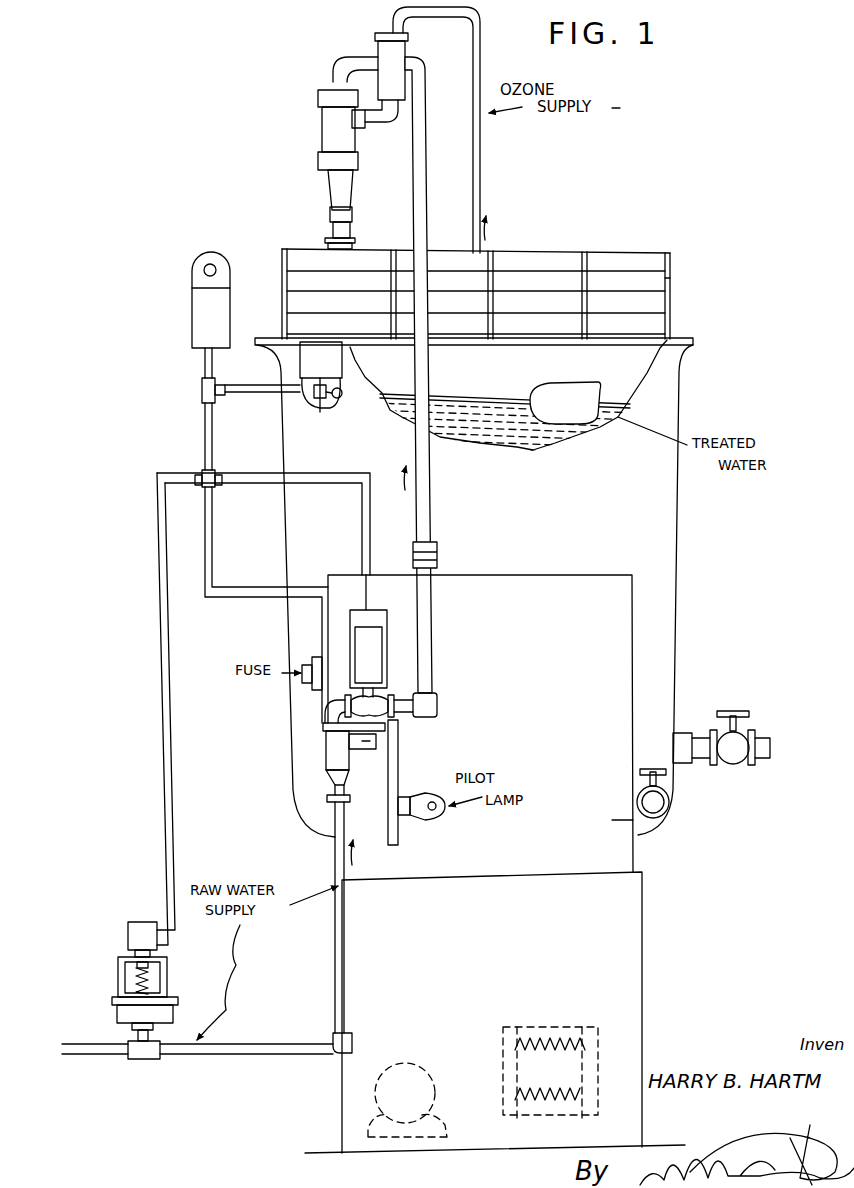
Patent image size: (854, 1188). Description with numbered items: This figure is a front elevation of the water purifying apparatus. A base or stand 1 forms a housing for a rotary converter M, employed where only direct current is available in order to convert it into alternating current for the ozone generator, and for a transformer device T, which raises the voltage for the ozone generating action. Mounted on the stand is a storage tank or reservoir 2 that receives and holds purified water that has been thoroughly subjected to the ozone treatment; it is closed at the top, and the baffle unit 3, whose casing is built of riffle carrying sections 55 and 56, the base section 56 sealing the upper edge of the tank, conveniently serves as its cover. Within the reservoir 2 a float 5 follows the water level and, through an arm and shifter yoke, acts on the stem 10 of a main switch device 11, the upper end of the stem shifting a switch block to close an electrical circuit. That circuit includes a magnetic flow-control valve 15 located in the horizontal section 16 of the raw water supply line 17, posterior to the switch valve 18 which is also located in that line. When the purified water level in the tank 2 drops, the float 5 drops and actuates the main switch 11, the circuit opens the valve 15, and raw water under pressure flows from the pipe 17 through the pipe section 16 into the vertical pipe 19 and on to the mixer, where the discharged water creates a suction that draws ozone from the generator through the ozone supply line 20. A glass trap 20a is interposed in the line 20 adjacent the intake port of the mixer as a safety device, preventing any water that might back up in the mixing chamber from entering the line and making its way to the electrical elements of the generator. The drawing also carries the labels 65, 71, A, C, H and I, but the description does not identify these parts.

The base or stand 1 is at (495, 1012).
The storage tank or reservoir 2 is at (475, 588).
The baffle unit 3 is at (545, 262).
The float 5 is at (531, 394).
The stem 10 is at (320, 412).
The main switch device 11 is at (321, 361).
The magnetic flow-control valve 15 is at (352, 630).
The horizontal section 16 is at (400, 715).
The raw water supply line 17 is at (333, 850).
The switch valve 18 is at (326, 758).
The vertical pipe 19 is at (414, 177).
The ozone supply line 20 is at (482, 174).
The glass trap 20a is at (383, 47).
The riffle carrying section 55 is at (672, 278).
The base section 56 is at (672, 338).
The pressure switch 65 is at (120, 990).
The switch box 71 is at (128, 935).
The mixer A is at (327, 140).
The control box C is at (435, 652).
The hand switch H is at (192, 318).
The conduit I is at (208, 532).
The rotary converter M is at (405, 1080).
The transformer device T is at (568, 1027).